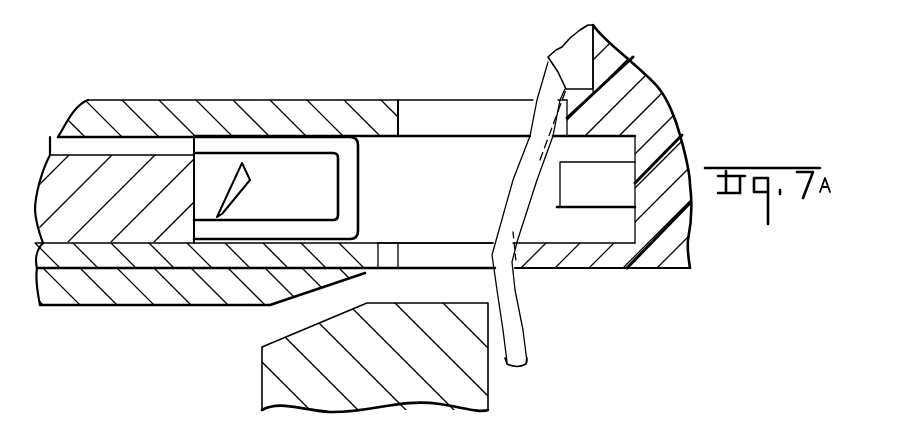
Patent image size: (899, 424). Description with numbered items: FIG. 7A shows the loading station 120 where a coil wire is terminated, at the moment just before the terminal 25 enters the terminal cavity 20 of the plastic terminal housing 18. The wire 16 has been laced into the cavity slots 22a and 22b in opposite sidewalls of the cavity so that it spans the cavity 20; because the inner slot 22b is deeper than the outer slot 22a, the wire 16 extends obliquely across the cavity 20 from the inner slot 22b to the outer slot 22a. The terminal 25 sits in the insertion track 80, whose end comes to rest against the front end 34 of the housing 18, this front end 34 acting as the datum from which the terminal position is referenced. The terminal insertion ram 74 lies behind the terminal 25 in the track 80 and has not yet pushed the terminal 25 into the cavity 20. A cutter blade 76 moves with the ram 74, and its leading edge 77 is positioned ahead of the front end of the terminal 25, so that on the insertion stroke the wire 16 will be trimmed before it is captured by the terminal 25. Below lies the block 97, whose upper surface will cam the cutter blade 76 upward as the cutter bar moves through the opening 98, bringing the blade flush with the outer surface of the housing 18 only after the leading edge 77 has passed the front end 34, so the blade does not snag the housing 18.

The wire 16 is at (520, 172).
The terminal housing 18 is at (655, 85).
The terminal cavity 20 is at (613, 233).
The outer slot 22a is at (478, 248).
The inner slot 22b is at (498, 110).
The terminal 25 is at (278, 140).
The front end of housing 34 is at (393, 250).
The terminal insertion ram 74 is at (128, 163).
The cutter blade 76 is at (167, 290).
The leading edge 77 is at (366, 273).
The insertion track 80 is at (214, 108).
The block 97 is at (272, 390).
The opening 98 is at (453, 283).
The loading station 120 is at (433, 72).